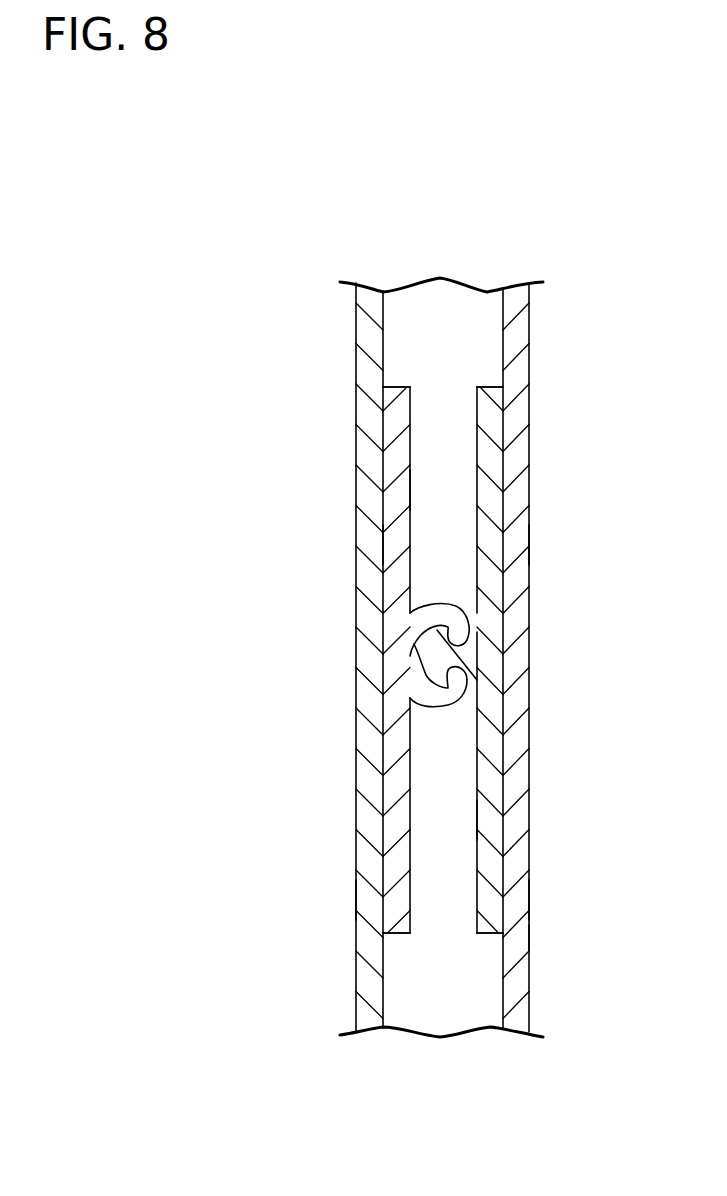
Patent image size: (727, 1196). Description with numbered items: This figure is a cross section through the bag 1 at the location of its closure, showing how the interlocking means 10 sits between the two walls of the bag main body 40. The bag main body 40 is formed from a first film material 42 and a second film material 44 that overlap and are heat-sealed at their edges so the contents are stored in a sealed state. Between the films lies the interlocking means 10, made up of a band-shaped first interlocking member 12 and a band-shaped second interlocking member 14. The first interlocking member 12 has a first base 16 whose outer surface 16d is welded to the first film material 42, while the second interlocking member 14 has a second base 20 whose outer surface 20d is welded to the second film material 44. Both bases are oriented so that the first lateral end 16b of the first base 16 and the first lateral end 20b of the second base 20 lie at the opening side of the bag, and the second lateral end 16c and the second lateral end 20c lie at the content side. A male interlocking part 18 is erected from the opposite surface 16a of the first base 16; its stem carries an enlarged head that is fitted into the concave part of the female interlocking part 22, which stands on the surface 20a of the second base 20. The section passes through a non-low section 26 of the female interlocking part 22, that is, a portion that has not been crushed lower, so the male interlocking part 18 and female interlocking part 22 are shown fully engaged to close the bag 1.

The bag 1 is at (596, 182).
The interlocking means 10 is at (492, 376).
The first interlocking member 12 is at (511, 462).
The second interlocking member 14 is at (372, 866).
The first base 16 is at (488, 503).
The opposite surface of first base 16a is at (477, 810).
The first lateral end of first base 16b is at (482, 386).
The second lateral end of first base 16c is at (490, 934).
The outer surface of first base 16d is at (532, 546).
The male interlocking part 18 is at (443, 653).
The second base 20 is at (398, 461).
The surface of second base 20a is at (410, 484).
The first lateral end of second base 20b is at (395, 386).
The second lateral end of second base 20c is at (397, 935).
The outer surface of second base 20d is at (383, 545).
The female interlocking part 22 is at (457, 624).
The non-low section 26 is at (455, 722).
The bag main body 40 is at (547, 937).
The first film material 42 is at (532, 900).
The second film material 44 is at (355, 900).